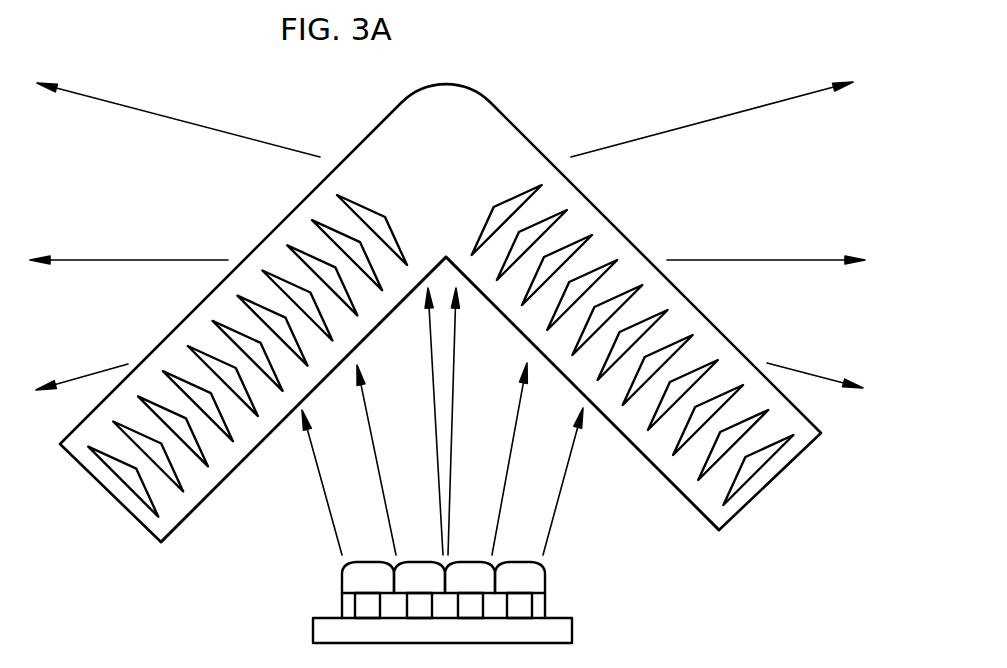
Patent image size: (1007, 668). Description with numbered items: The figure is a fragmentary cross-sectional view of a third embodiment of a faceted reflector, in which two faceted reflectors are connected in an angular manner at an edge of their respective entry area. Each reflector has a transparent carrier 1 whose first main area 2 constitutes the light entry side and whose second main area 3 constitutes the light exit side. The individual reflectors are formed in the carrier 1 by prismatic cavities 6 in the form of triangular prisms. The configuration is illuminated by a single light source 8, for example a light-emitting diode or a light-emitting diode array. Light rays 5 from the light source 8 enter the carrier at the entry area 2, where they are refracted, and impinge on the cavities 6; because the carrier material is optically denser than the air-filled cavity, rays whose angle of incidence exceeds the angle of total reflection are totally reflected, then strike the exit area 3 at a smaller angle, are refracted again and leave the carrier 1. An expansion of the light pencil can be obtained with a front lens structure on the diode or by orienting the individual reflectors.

The transparent carrier 1 is at (76, 446).
The first main area 2 is at (205, 502).
The second main area 3 is at (272, 229).
The light rays 5 is at (442, 421).
The prismatic cavities 6 is at (748, 468).
The light source 8 is at (563, 632).